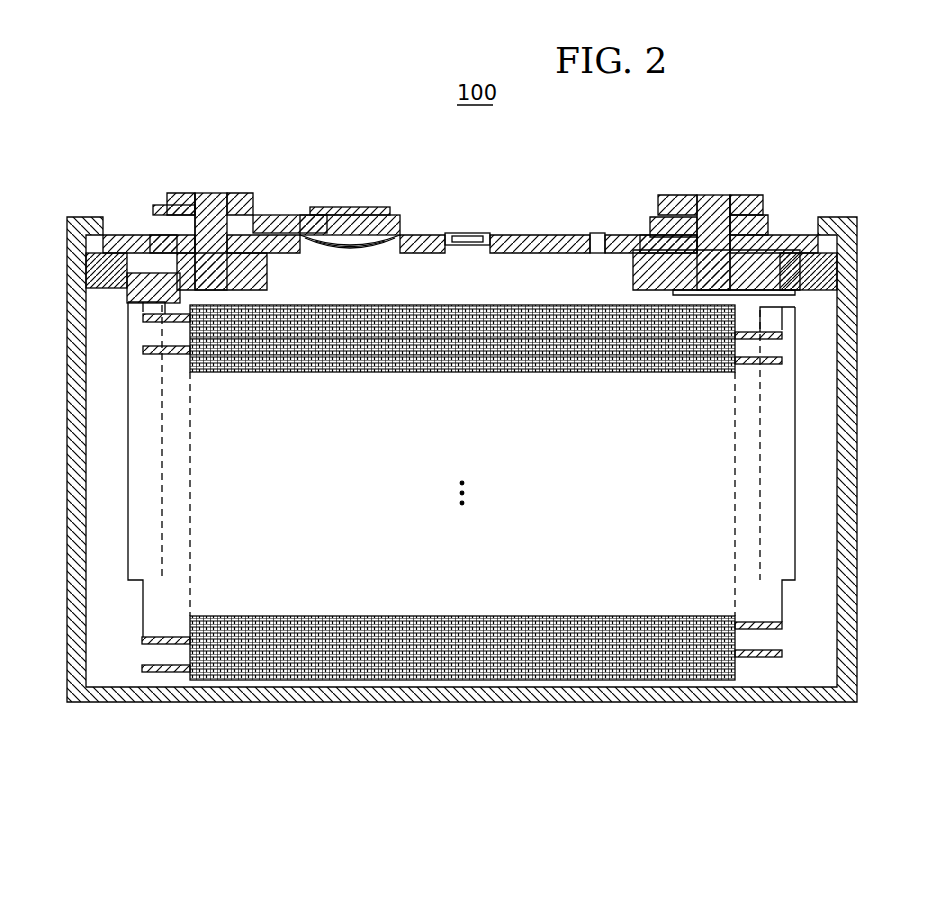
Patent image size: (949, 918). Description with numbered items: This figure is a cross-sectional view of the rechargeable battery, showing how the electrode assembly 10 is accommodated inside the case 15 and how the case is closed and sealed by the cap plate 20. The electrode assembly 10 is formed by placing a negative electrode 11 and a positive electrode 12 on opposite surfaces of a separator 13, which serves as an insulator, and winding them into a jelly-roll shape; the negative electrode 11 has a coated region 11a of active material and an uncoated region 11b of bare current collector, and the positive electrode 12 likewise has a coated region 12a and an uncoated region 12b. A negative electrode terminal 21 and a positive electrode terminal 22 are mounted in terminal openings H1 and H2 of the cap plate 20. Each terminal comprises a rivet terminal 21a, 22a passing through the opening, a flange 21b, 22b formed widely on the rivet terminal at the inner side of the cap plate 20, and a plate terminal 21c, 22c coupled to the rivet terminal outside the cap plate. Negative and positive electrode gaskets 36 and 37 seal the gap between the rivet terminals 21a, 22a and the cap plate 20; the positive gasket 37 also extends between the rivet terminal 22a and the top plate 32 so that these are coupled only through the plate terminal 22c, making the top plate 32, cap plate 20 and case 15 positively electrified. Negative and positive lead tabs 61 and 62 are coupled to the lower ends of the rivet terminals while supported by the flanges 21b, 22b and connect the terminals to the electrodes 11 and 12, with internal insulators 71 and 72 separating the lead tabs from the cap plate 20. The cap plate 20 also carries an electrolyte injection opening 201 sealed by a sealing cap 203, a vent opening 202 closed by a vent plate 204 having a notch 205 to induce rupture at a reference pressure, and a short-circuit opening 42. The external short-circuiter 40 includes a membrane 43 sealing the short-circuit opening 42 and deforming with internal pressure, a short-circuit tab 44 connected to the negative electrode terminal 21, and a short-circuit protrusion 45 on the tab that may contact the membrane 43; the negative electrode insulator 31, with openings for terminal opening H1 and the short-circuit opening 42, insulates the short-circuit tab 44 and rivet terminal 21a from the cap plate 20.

The electrode assembly 10 is at (575, 690).
The negative electrode 11 is at (222, 552).
The coated region 11a is at (275, 675).
The uncoated region 11b is at (166, 548).
The positive electrode 12 is at (723, 561).
The coated region 12a is at (670, 675).
The uncoated region 12b is at (765, 554).
The separator 13 is at (475, 668).
The case 15 is at (850, 398).
The cap plate 20 is at (548, 237).
The negative electrode terminal 21 is at (212, 190).
The rivet terminal 21a is at (218, 290).
The flange 21b is at (268, 222).
The plate terminal 21c is at (236, 212).
The positive electrode terminal 22 is at (712, 192).
The rivet terminal 22a is at (735, 292).
The flange 22b is at (683, 290).
The plate terminal 22c is at (756, 200).
The negative electrode insulator 31 is at (386, 208).
The top plate 32 is at (766, 205).
The negative electrode gasket 36 is at (152, 246).
The positive electrode gasket 37 is at (690, 215).
The external short-circuiter 40 is at (340, 208).
The short-circuit opening 42 is at (370, 250).
The membrane 43 is at (338, 250).
The short-circuit tab 44 is at (165, 208).
The short-circuit protrusion 45 is at (352, 250).
The negative lead tab 61 is at (126, 410).
The positive lead tab 62 is at (797, 548).
The internal insulator 71 is at (98, 270).
The internal insulator 72 is at (830, 275).
The electrolyte injection opening 201 is at (582, 255).
The vent opening 202 is at (468, 255).
The sealing cap 203 is at (600, 235).
The vent plate 204 is at (495, 234).
The notch 205 is at (462, 235).
The terminal opening H1 is at (205, 200).
The terminal opening H2 is at (718, 235).